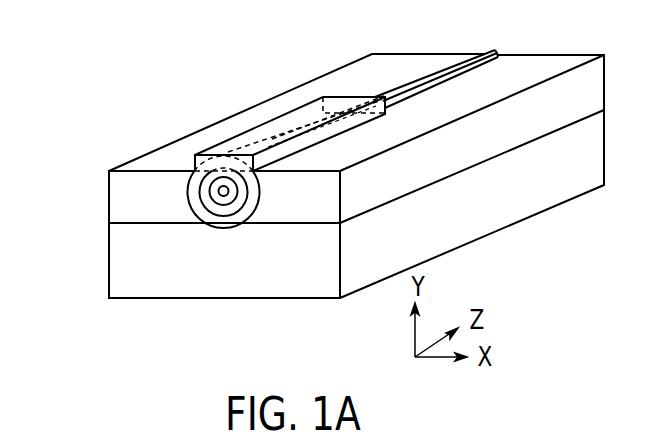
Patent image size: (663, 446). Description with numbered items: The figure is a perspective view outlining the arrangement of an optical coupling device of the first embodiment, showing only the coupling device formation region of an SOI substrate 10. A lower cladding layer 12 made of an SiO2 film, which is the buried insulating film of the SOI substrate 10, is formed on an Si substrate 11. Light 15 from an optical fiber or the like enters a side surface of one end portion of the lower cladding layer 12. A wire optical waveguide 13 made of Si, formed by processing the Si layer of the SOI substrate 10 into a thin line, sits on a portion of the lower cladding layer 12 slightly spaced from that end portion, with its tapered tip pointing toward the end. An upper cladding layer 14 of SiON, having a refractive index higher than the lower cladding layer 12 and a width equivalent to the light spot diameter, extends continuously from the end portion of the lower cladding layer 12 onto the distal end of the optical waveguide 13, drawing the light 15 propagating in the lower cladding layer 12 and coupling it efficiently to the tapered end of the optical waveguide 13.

The SOI substrate 10 is at (545, 237).
The Si substrate 11 is at (109, 253).
The lower cladding layer 12 is at (109, 188).
The wire optical waveguide 13 is at (468, 59).
The upper cladding layer 14 is at (256, 127).
The light 15 is at (187, 190).